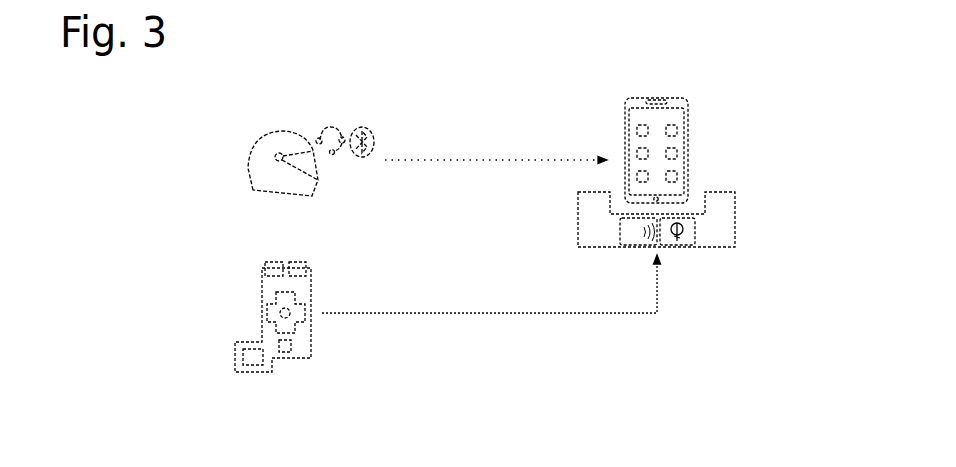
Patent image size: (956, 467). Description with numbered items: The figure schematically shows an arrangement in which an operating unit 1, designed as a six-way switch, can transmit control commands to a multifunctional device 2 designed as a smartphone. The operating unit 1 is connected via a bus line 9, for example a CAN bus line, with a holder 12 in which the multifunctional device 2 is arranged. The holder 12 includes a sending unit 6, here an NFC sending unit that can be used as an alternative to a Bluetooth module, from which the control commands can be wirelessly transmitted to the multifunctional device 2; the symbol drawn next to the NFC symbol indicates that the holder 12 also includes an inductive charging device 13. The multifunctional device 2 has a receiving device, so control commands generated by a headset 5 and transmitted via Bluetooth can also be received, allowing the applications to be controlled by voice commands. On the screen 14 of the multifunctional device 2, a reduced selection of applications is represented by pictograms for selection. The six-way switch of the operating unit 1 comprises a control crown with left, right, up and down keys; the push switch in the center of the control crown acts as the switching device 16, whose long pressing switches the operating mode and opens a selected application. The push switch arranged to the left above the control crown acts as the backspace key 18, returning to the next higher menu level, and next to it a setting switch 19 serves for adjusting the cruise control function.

The operating unit 1 is at (234, 384).
The multifunctional device 2 is at (718, 98).
The headset 5 is at (308, 108).
The sending unit 6 is at (637, 235).
The bus line 9 is at (508, 313).
The holder 12 is at (718, 237).
The inductive charging device 13 is at (688, 237).
The screen 14 is at (677, 164).
The switching device 16 is at (288, 318).
The backspace key 18 is at (266, 270).
The setting switch 19 is at (305, 270).